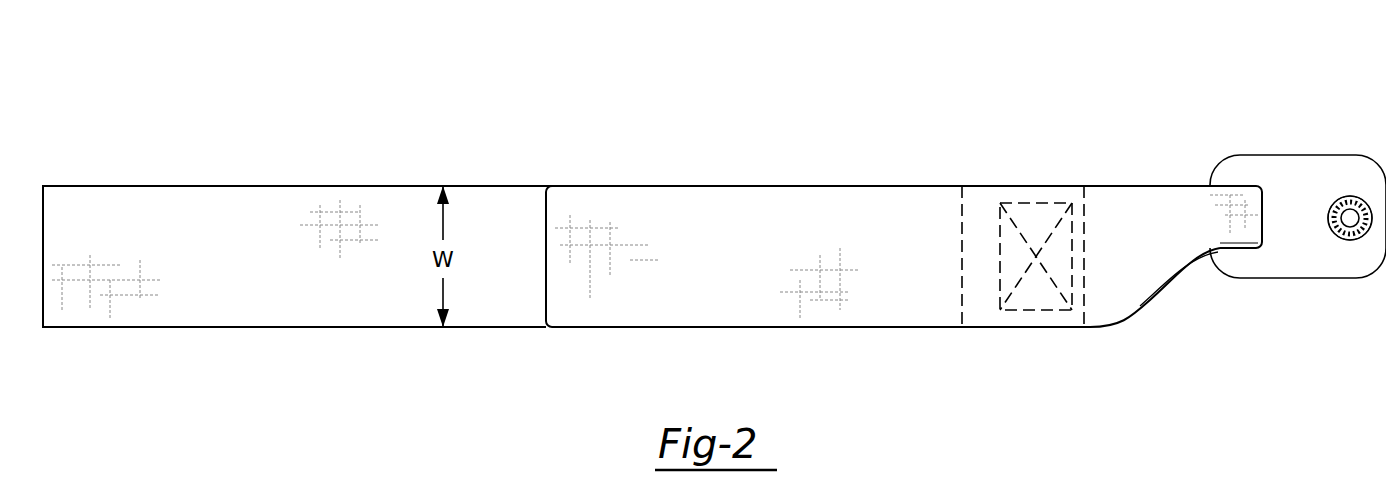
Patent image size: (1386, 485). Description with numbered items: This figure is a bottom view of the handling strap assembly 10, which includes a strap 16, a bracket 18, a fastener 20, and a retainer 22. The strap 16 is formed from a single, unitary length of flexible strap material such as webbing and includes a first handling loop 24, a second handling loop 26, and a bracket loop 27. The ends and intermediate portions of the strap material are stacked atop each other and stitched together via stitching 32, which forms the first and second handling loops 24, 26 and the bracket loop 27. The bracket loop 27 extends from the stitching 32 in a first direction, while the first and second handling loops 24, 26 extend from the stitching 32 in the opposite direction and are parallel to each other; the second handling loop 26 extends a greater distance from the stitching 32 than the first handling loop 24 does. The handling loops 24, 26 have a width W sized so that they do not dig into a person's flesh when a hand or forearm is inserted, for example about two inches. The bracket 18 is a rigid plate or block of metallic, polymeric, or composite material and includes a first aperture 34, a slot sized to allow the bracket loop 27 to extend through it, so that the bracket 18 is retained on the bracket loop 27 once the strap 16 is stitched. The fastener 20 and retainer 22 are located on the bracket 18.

The handling strap assembly 10 is at (642, 96).
The strap 16 is at (766, 180).
The bracket 18 is at (1305, 163).
The fastener 20 is at (1350, 213).
The retainer 22 is at (1343, 235).
The first handling loop 24 is at (647, 305).
The second handling loop 26 is at (158, 207).
The bracket loop 27 is at (1250, 193).
The stitching 32 is at (1038, 312).
The first aperture 34 is at (1255, 250).